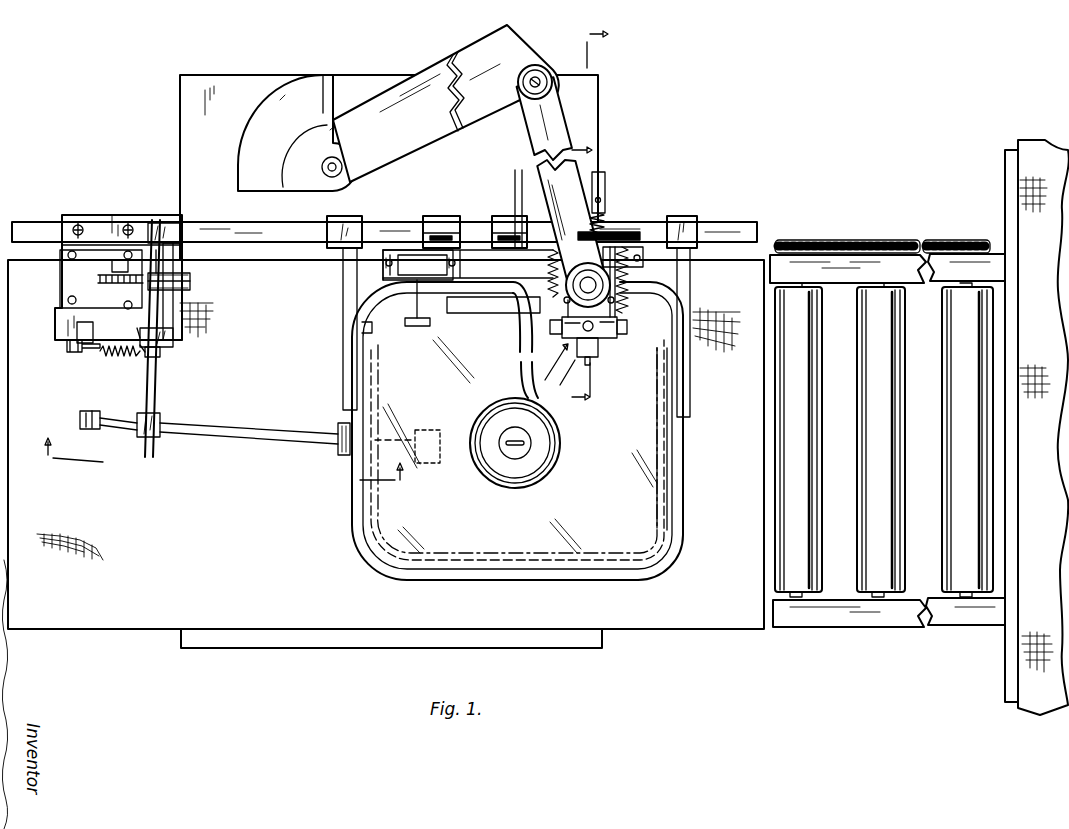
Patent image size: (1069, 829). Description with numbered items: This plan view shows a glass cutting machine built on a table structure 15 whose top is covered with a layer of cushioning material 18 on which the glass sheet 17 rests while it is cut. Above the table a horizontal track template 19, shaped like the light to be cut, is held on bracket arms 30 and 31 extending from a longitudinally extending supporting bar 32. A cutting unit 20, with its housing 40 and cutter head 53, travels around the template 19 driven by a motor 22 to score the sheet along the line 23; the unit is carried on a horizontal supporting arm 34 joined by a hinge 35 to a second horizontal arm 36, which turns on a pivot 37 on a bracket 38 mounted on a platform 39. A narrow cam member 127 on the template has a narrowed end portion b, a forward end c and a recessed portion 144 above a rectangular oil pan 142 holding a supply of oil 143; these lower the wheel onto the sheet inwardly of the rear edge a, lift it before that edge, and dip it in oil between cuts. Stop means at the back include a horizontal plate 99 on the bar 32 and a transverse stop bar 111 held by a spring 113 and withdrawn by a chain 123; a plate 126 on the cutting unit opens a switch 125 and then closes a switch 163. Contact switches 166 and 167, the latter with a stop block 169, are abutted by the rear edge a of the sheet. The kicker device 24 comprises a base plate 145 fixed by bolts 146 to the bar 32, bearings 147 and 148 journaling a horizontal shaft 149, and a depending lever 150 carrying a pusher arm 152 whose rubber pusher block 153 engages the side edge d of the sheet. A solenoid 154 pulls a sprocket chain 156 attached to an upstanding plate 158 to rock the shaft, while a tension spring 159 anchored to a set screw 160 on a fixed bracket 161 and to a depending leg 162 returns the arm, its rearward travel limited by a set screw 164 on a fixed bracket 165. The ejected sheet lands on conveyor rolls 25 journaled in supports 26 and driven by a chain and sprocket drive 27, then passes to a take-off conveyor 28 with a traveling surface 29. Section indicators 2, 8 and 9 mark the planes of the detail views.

The table structure 15 is at (118, 648).
The glass sheet 17 is at (533, 562).
The cushioning material 18 is at (708, 628).
The track template 19 is at (672, 448).
The cutting unit 20 is at (612, 352).
The motor 22 is at (504, 470).
The score line 23 is at (594, 548).
The kicker device 24 is at (170, 369).
The conveyor rolls 25 is at (875, 418).
The supports 26 is at (830, 294).
The chain and sprocket drive 27 is at (840, 232).
The take-off conveyor 28 is at (1000, 664).
The traveling surface 29 is at (1030, 164).
The bracket arm 30 is at (338, 292).
The bracket arm 31 is at (690, 285).
The supporting bar 32 is at (310, 222).
The supporting arm 34 is at (566, 140).
The hinge 35 is at (550, 74).
The second horizontal arm 36 is at (446, 103).
The pivot 37 is at (336, 158).
The bracket 38 is at (250, 146).
The platform 39 is at (388, 78).
The housing 40 is at (592, 264).
The cutter head 53 is at (559, 372).
The horizontal plate 99 is at (626, 222).
The stop bar 111 is at (606, 170).
The spring 113 is at (612, 200).
The chain 123 is at (600, 148).
The switch 125 is at (444, 222).
The plate 126 is at (608, 210).
The cam member 127 is at (408, 310).
The oil pan 142 is at (498, 350).
The supply of oil 143 is at (462, 317).
The recessed portion 144 is at (526, 280).
The base plate 145 is at (70, 318).
The bolts 146 is at (82, 228).
The bearing 147 is at (176, 224).
The bearing 148 is at (175, 338).
The shaft 149 is at (152, 393).
The depending lever 150 is at (118, 432).
The pusher arm 152 is at (272, 422).
The pusher block 153 is at (330, 457).
The solenoid 154 is at (68, 283).
The sprocket chain 156 is at (178, 300).
The upstanding plate 158 is at (192, 278).
The tension spring 159 is at (118, 362).
The set screw 160 is at (64, 348).
The fixed bracket 161 is at (94, 332).
The depending leg 162 is at (165, 352).
The switch 163 is at (496, 216).
The set screw 164 is at (146, 360).
The fixed bracket 165 is at (136, 330).
The contact switch 166 is at (640, 256).
The contact switch 167 is at (402, 250).
The stop block 169 is at (425, 332).
The section line 2 is at (584, 274).
The section line 8 is at (590, 122).
The section line 9 is at (220, 469).
The rear edge a is at (478, 362).
The narrowed end portion b is at (636, 352).
The forward end c is at (372, 328).
The side edge d is at (356, 492).